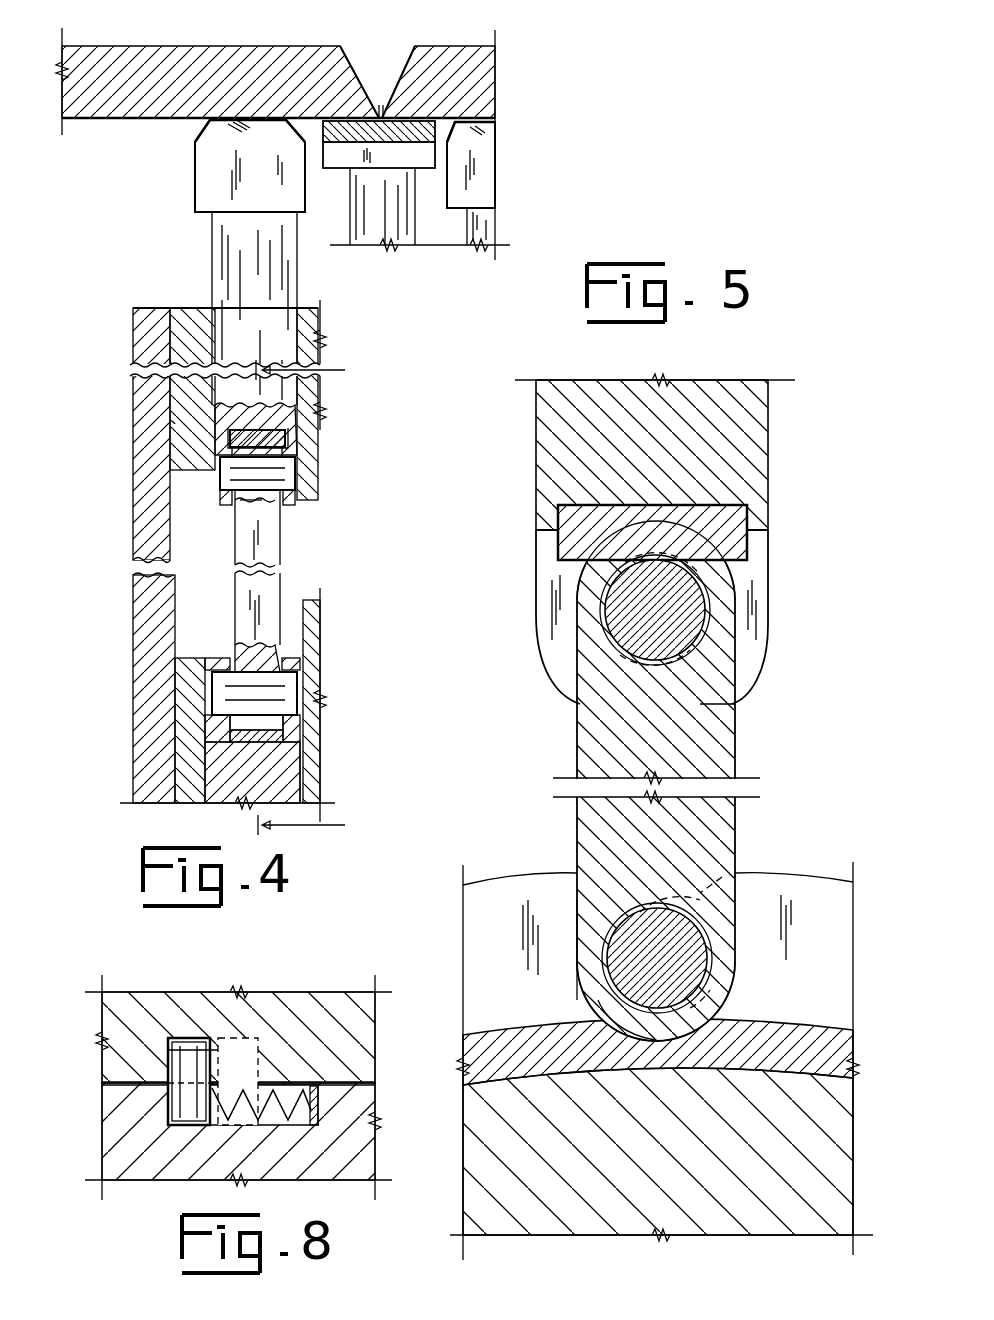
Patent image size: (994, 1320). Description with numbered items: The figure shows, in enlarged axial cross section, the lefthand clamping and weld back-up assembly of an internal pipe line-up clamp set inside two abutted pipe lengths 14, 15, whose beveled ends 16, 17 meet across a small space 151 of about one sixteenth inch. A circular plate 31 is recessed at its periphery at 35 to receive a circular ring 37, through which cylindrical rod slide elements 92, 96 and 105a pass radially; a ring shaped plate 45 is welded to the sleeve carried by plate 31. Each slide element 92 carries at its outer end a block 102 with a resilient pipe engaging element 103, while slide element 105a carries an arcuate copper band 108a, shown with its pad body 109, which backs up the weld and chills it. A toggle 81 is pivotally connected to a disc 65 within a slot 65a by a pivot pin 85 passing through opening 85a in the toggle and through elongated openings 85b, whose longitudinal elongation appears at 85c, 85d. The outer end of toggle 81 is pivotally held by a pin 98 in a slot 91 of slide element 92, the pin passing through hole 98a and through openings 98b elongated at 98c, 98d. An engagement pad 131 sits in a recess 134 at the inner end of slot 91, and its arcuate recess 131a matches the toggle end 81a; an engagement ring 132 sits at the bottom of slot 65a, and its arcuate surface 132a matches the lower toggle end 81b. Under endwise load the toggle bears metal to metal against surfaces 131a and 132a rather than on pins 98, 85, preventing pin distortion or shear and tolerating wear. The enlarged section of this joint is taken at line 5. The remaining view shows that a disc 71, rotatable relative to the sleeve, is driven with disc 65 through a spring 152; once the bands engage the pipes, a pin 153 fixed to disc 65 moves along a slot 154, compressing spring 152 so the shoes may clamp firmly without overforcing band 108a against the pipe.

In FIG. 4, the pipe length 14 is at (194, 46).
In FIG. 4, the pipe length 15 is at (452, 46).
In FIG. 4, the bevel 16 is at (348, 48).
In FIG. 4, the bevel 17 is at (401, 48).
In FIG. 4, the space 151 is at (381, 105).
In FIG. 4, the resilient pipe engaging element 103 is at (208, 126).
In FIG. 4, the block 102 is at (193, 176).
In FIG. 4, the arcuate band 108a is at (440, 130).
In FIG. 4, the insert body 109 is at (440, 158).
In FIG. 4, the slide element 105a is at (350, 220).
In FIG. 4, the slide element 96 is at (467, 228).
In FIG. 4, the slide element 92 is at (212, 254).
In FIG. 5, the slide element 92 is at (770, 445).
In FIG. 4, the circular plate 31 is at (133, 330).
In FIG. 4, the circular ring 37 is at (170, 357).
In FIG. 4, the peripheral recess 35 is at (175, 422).
In FIG. 4, the toggle end 81a is at (235, 428).
In FIG. 5, the toggle end 81a is at (650, 523).
In FIG. 4, the slot 91 is at (272, 434).
In FIG. 5, the slot 91 is at (747, 654).
In FIG. 4, the engagement pad 131 is at (290, 439).
In FIG. 5, the engagement pad 131 is at (748, 546).
In FIG. 5, the recess 134 is at (748, 523).
In FIG. 5, the arcuate recess 131a is at (730, 592).
In FIG. 4, the pin 98 is at (248, 502).
In FIG. 5, the pin 98 is at (608, 640).
In FIG. 4, the hole 98a is at (297, 474).
In FIG. 5, the hole 98a is at (736, 704).
In FIG. 5, the opening 98b is at (607, 617).
In FIG. 4, the elongation 98c is at (297, 492).
In FIG. 5, the elongation 98c is at (575, 690).
In FIG. 4, the elongation 98d is at (283, 452).
In FIG. 5, the elongation 98d is at (635, 570).
In FIG. 4, the toggle 81 is at (282, 546).
In FIG. 5, the toggle 81 is at (735, 765).
In FIG. 4, the toggle end 81b is at (246, 744).
In FIG. 5, the toggle end 81b is at (716, 1040).
In FIG. 4, the section line 5 is at (311, 598).
In FIG. 4, the ring shaped plate 45 is at (175, 719).
In FIG. 4, the disc 65 is at (205, 758).
In FIG. 5, the disc 65 is at (853, 1130).
In FIG. 8, the disc 65 is at (102, 1017).
In FIG. 4, the slot 65a is at (288, 762).
In FIG. 5, the slot 65a is at (512, 893).
In FIG. 4, the pivot pin 85 is at (285, 722).
In FIG. 5, the pivot pin 85 is at (700, 925).
In FIG. 4, the opening 85a is at (226, 678).
In FIG. 5, the opening 85a is at (606, 948).
In FIG. 5, the opening 85b is at (712, 963).
In FIG. 4, the elongation 85c is at (300, 678).
In FIG. 5, the elongation 85c is at (722, 877).
In FIG. 4, the elongation 85d is at (298, 713).
In FIG. 5, the elongation 85d is at (710, 992).
In FIG. 4, the engagement ring 132 is at (285, 740).
In FIG. 5, the engagement ring 132 is at (497, 1035).
In FIG. 5, the arcuate recess 132a is at (608, 1018).
In FIG. 8, the disc 71 is at (102, 1145).
In FIG. 8, the spring 152 is at (246, 1125).
In FIG. 8, the pin 153 is at (168, 1067).
In FIG. 8, the slot 154 is at (298, 1125).